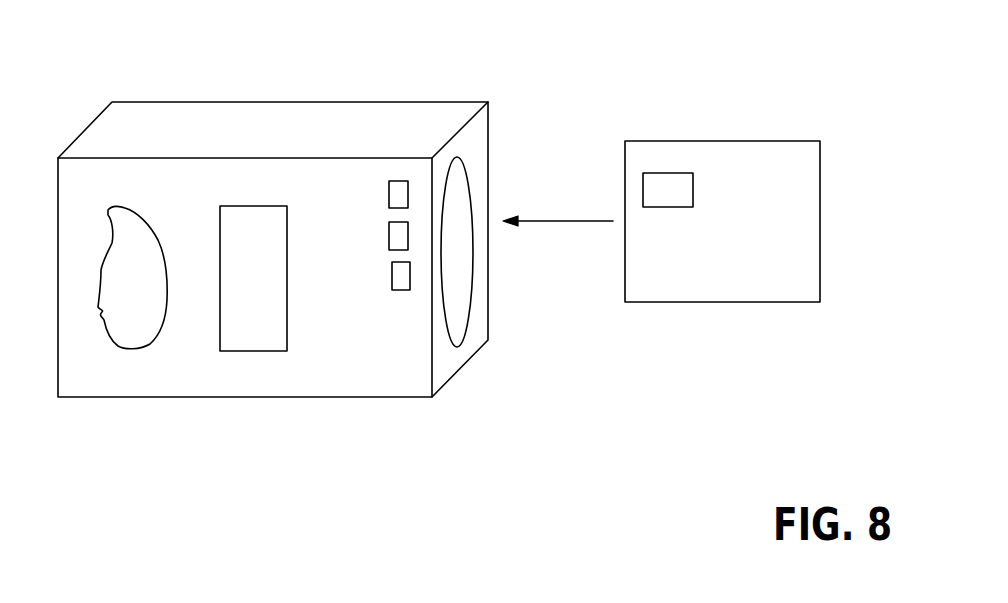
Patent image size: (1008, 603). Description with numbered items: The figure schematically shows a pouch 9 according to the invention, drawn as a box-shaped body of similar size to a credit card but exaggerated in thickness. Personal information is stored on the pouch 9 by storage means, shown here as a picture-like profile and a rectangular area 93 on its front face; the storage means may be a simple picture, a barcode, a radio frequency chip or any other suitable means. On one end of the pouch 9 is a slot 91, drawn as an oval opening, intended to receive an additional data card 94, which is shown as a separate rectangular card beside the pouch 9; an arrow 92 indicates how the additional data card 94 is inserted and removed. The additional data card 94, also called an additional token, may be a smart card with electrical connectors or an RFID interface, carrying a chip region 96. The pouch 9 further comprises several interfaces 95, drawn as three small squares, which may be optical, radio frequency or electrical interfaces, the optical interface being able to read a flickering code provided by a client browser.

The pouch 9 is at (260, 113).
The slot 91 is at (458, 328).
The arrow 92 is at (572, 221).
The display elements 93 is at (248, 327).
The additional data card 94 is at (770, 167).
The interfaces 95 is at (397, 275).
The transmitter 96 is at (665, 193).